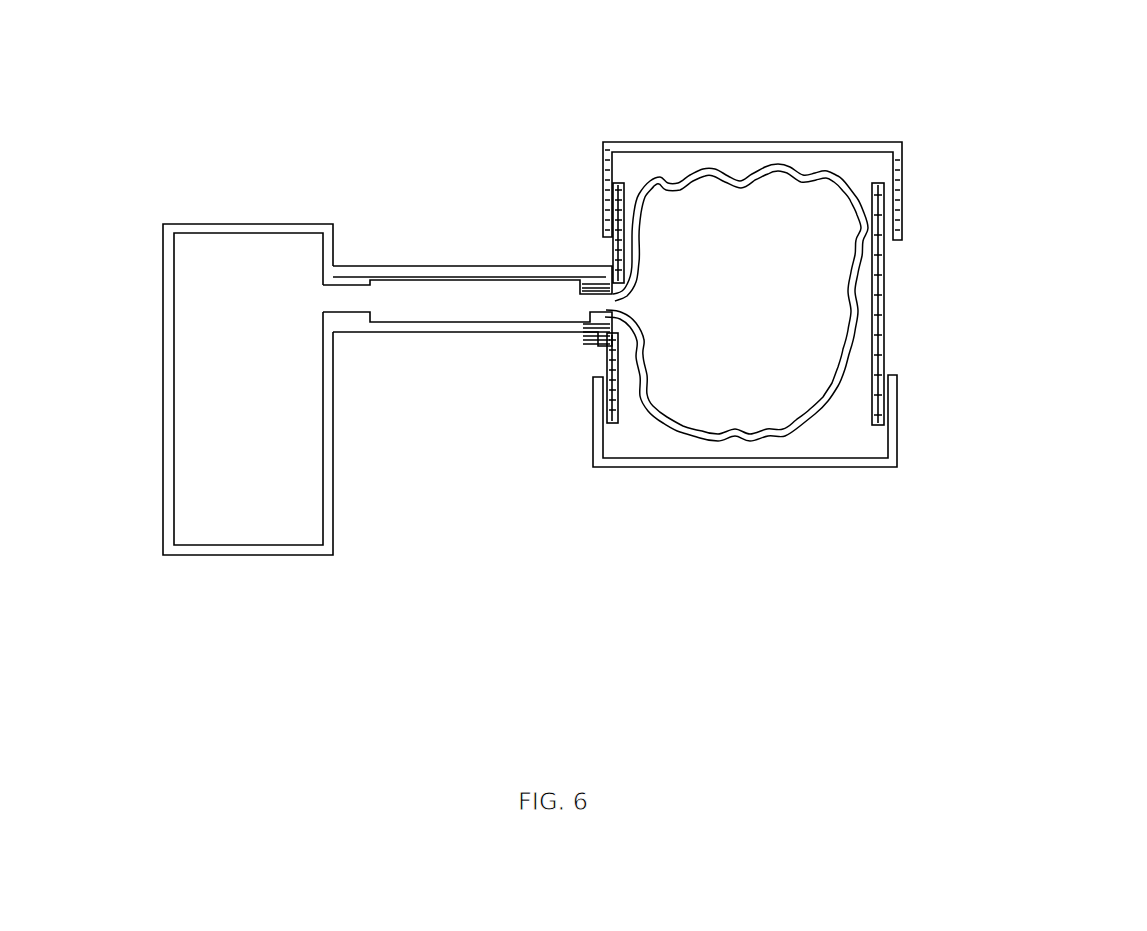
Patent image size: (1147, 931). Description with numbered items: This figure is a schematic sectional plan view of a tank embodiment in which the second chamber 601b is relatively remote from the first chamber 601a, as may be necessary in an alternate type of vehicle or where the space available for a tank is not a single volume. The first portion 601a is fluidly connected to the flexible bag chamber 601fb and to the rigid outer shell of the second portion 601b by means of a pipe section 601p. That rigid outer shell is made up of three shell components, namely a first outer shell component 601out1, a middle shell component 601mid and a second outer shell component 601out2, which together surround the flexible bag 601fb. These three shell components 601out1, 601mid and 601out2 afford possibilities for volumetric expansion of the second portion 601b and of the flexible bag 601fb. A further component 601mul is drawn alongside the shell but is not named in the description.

The first chamber 601a is at (330, 537).
The pipe section 601p is at (417, 334).
The rigid outer shell component 601out1 is at (878, 140).
The rigid outer shell component 601out2 is at (897, 428).
The middle shell component 601mid is at (610, 248).
The multilayer portion 601mul is at (880, 312).
The flexible bag chamber 601fb is at (827, 413).
The second chamber 601b is at (937, 220).